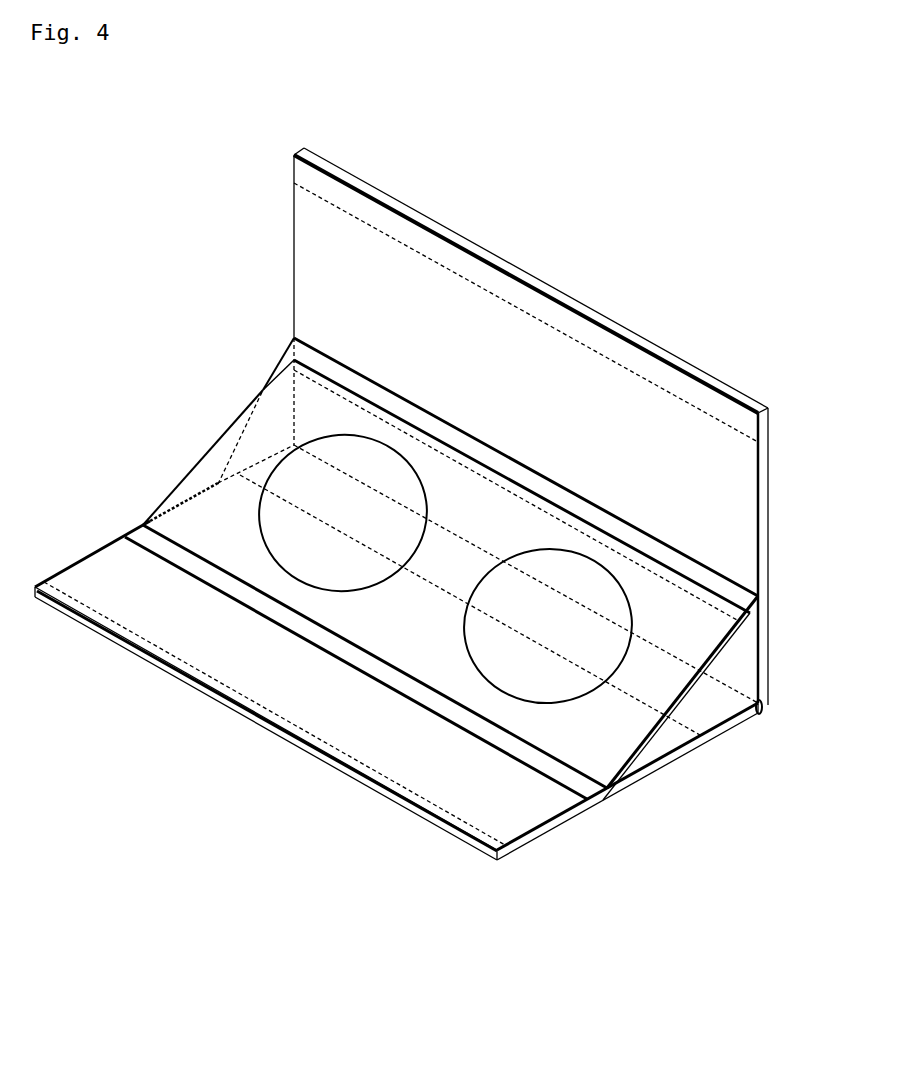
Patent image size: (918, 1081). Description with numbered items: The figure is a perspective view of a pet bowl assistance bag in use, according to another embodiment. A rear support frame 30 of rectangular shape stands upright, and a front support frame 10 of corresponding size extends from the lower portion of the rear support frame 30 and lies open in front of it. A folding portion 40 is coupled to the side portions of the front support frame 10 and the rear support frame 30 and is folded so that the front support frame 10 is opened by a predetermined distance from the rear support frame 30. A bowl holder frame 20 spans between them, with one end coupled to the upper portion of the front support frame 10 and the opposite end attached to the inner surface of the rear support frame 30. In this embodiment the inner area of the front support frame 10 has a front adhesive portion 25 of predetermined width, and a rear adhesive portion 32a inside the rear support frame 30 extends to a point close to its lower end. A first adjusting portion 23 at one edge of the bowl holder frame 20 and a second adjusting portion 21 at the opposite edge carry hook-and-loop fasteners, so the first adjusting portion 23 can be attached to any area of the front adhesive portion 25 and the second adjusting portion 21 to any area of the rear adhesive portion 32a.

The front support frame 10 is at (263, 739).
The bowl holder frame 20 is at (426, 622).
The second adjusting portion 21 is at (708, 578).
The first adjusting portion 23 is at (560, 770).
The front adhesive portion 25 is at (168, 662).
The rear support frame 30 is at (531, 426).
The rear adhesive portion 32a is at (523, 311).
The folding portion 40 is at (738, 672).